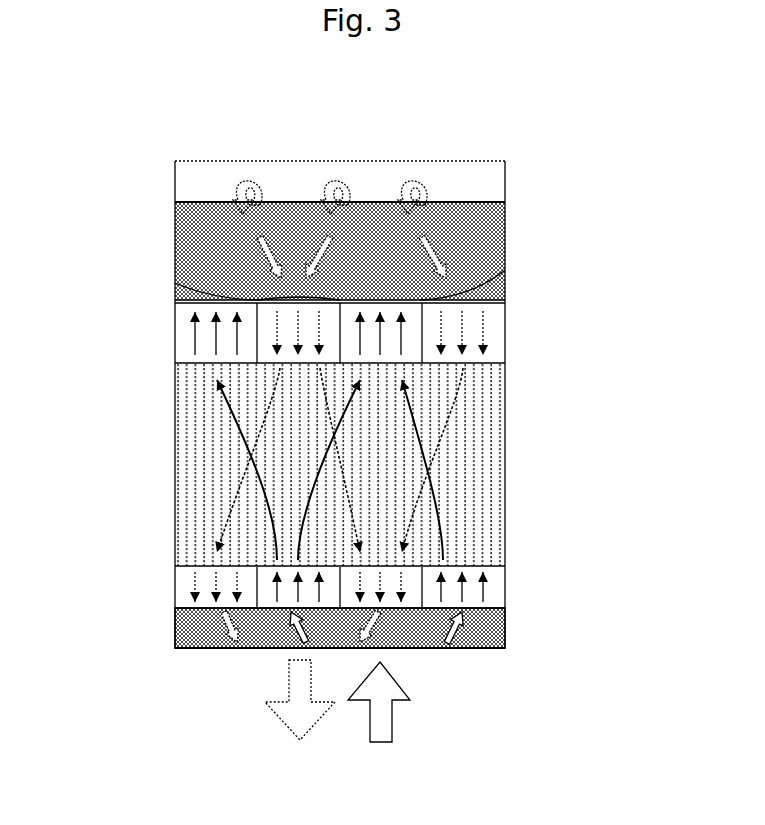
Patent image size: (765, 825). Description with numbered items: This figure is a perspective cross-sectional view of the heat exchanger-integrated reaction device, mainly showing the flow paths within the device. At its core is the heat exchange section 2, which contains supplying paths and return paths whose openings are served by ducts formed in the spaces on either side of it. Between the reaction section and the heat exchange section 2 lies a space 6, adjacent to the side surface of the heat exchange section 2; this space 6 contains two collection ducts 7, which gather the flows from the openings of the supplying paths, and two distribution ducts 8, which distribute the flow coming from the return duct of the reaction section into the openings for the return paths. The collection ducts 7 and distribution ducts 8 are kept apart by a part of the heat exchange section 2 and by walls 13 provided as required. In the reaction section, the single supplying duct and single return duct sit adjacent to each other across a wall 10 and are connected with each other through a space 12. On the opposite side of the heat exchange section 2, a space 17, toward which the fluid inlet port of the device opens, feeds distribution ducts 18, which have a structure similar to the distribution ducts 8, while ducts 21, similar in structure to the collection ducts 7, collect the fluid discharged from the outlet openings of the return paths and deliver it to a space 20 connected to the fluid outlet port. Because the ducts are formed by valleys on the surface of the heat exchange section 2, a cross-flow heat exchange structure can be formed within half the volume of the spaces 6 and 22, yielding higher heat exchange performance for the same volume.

The heat exchange section 2 is at (155, 363).
The space 6 is at (523, 303).
The collection ducts 7 is at (380, 335).
The distribution ducts 8 is at (452, 325).
The wall 10 is at (345, 243).
The space 12 is at (523, 162).
The walls 13 is at (445, 560).
The space 17 is at (175, 632).
The distribution ducts 18 is at (310, 594).
The space 20 is at (292, 628).
The collection ducts 21 is at (297, 628).
The space 22 is at (523, 567).